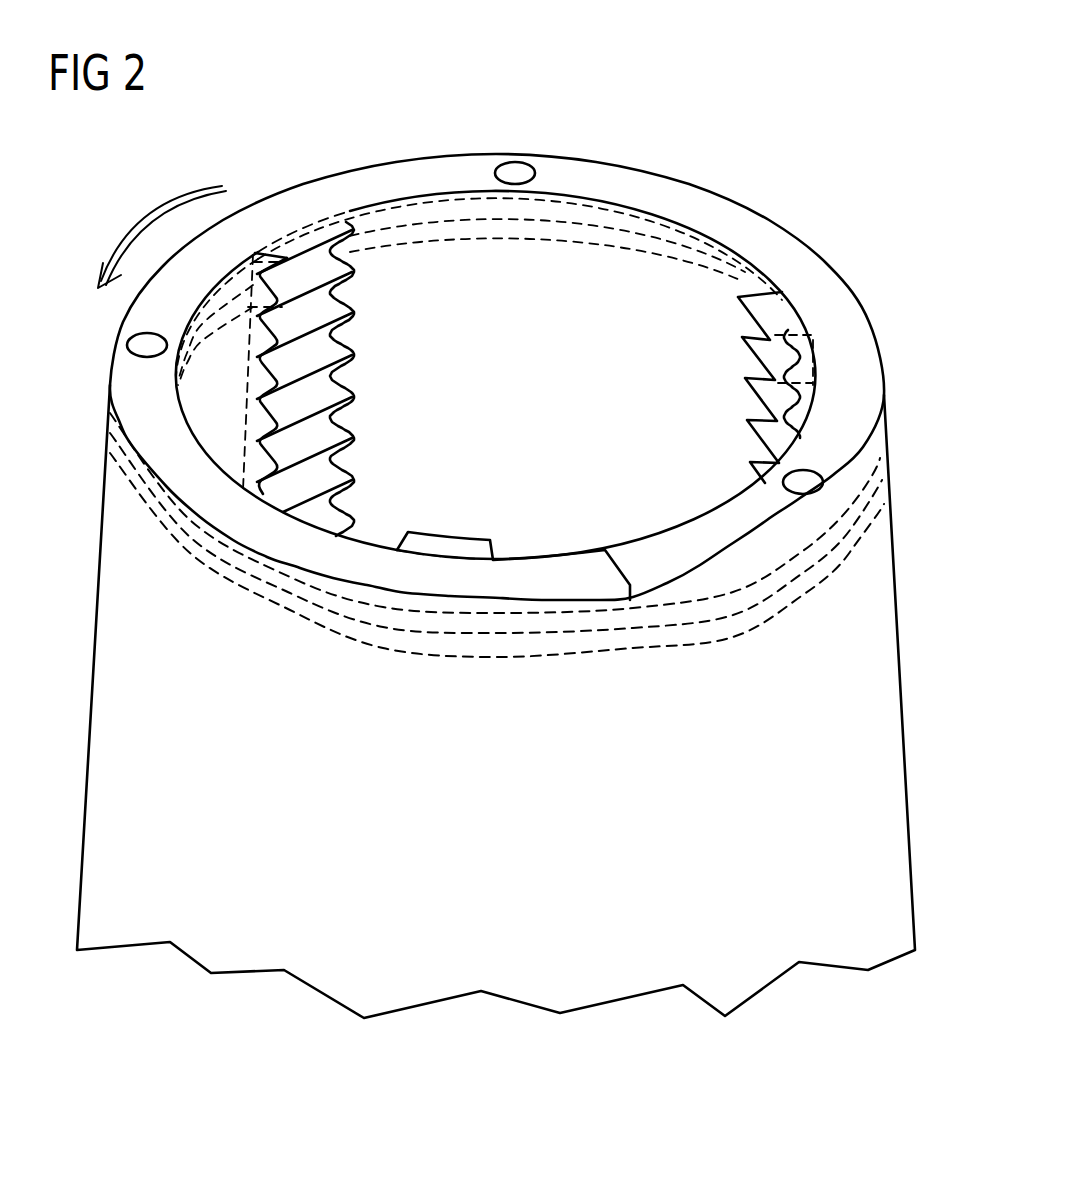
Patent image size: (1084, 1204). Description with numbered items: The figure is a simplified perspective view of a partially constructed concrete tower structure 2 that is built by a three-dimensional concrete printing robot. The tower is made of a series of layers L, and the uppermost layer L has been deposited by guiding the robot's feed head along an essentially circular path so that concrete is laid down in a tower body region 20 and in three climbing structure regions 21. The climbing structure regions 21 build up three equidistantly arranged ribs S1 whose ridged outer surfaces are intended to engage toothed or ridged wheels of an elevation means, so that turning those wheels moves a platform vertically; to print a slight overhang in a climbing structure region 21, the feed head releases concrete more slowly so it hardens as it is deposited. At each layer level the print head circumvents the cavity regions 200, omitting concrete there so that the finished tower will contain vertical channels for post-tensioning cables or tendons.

The concrete tower structure 2 is at (893, 800).
The tower body region 20 is at (863, 385).
The cavity region 200 is at (518, 172).
The climbing structure region 21 is at (569, 359).
The rib S1 is at (352, 302).
The layer L is at (335, 592).